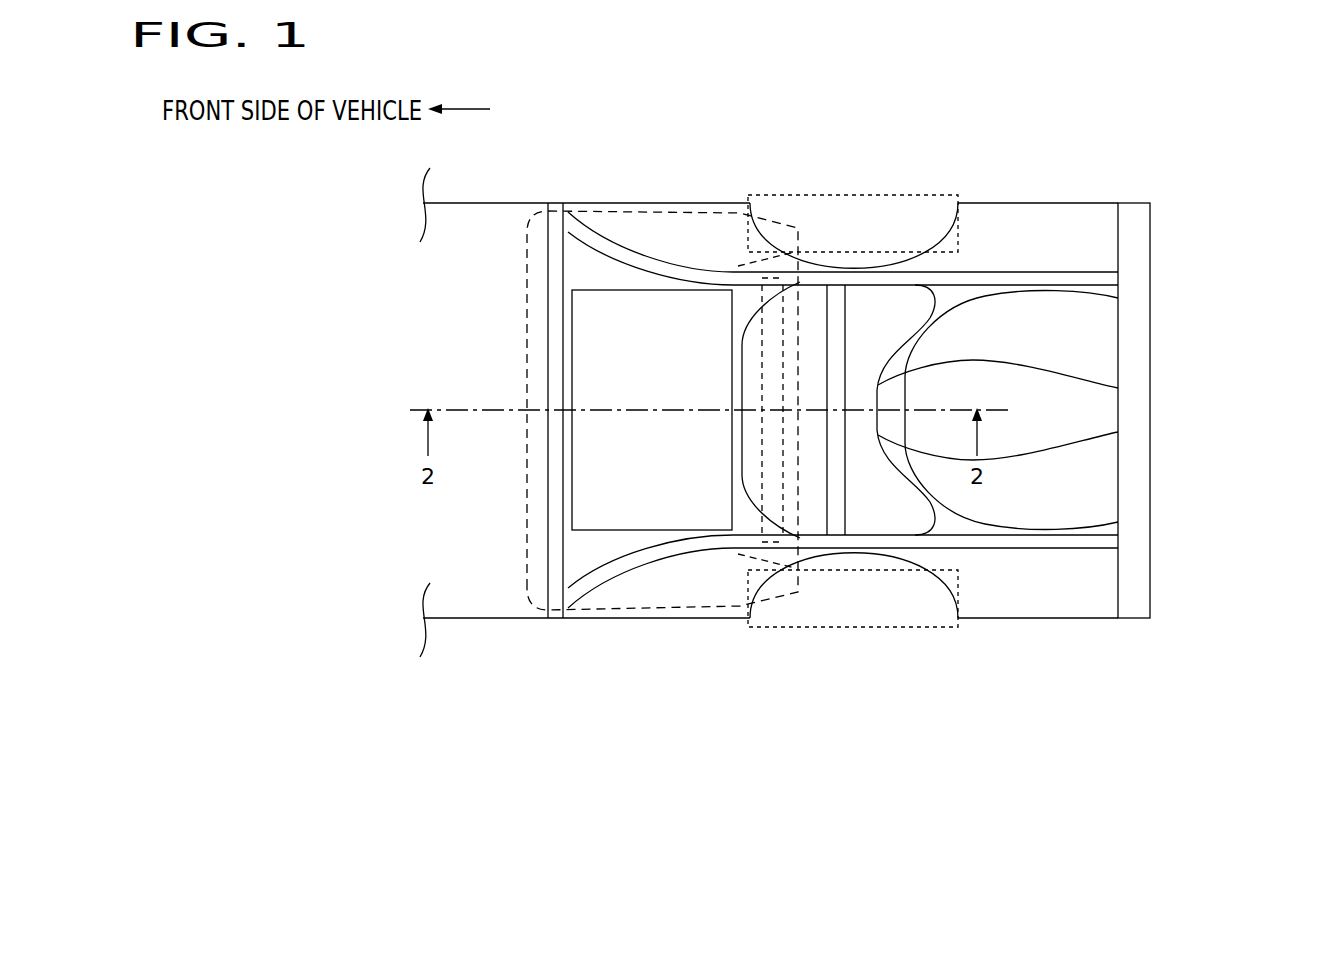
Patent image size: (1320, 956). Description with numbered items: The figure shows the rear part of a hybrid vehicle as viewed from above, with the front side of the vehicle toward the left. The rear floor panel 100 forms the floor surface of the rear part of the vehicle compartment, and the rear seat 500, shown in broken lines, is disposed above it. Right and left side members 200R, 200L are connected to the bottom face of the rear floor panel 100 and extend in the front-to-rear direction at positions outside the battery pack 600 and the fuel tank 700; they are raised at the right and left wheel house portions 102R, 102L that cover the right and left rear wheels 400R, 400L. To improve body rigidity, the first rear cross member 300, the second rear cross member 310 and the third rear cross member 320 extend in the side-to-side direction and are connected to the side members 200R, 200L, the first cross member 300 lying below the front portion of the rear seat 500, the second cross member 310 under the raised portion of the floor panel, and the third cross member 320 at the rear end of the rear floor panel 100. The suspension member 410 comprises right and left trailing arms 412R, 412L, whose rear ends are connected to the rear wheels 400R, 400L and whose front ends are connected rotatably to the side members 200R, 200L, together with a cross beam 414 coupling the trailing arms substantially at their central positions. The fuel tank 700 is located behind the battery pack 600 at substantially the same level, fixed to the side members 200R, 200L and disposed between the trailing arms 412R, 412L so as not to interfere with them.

The rear floor panel 100 is at (1018, 620).
The right wheel house portion 102R is at (937, 240).
The left wheel house portion 102L is at (935, 598).
The right side member 200R is at (1040, 272).
The left side member 200L is at (1080, 548).
The first rear cross member 300 is at (548, 540).
The second rear cross member 310 is at (823, 373).
The third rear cross member 320 is at (1152, 252).
The right rear wheel 400R is at (798, 195).
The left rear wheel 400L is at (798, 628).
The suspension member 410 is at (755, 448).
The right trailing arm 412R is at (740, 265).
The left trailing arm 412L is at (750, 555).
The cross beam 414 is at (762, 343).
The rear seat 500 is at (527, 282).
The battery pack 600 is at (627, 533).
The fuel tank 700 is at (1118, 388).